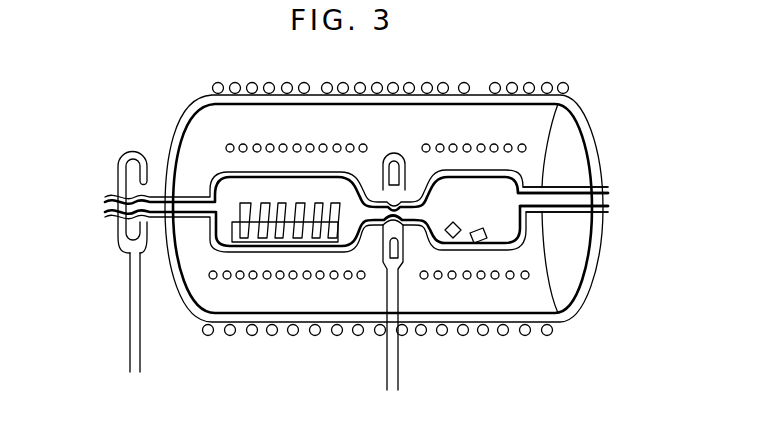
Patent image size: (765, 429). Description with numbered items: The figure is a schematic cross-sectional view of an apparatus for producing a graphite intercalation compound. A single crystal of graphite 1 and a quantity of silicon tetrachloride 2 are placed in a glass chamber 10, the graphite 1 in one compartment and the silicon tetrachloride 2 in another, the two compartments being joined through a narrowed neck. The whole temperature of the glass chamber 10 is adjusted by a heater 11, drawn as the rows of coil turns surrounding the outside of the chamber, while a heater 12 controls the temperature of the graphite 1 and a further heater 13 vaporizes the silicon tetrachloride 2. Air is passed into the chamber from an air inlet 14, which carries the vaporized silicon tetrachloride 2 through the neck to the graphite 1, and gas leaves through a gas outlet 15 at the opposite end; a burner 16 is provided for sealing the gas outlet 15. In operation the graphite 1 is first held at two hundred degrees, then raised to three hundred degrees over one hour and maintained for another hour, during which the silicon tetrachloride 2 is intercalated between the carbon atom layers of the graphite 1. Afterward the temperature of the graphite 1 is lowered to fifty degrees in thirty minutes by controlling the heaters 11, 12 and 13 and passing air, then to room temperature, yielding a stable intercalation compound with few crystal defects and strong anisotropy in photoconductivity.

The graphite crystal 1 is at (242, 232).
The silicon tetrachloride 2 is at (478, 243).
The glass chamber 10 is at (352, 254).
The heater 11 is at (457, 326).
The heater 12 is at (278, 280).
The heater 13 is at (513, 279).
The air inlet 14 is at (612, 198).
The gas outlet 15 is at (108, 212).
The burner 16 is at (130, 346).